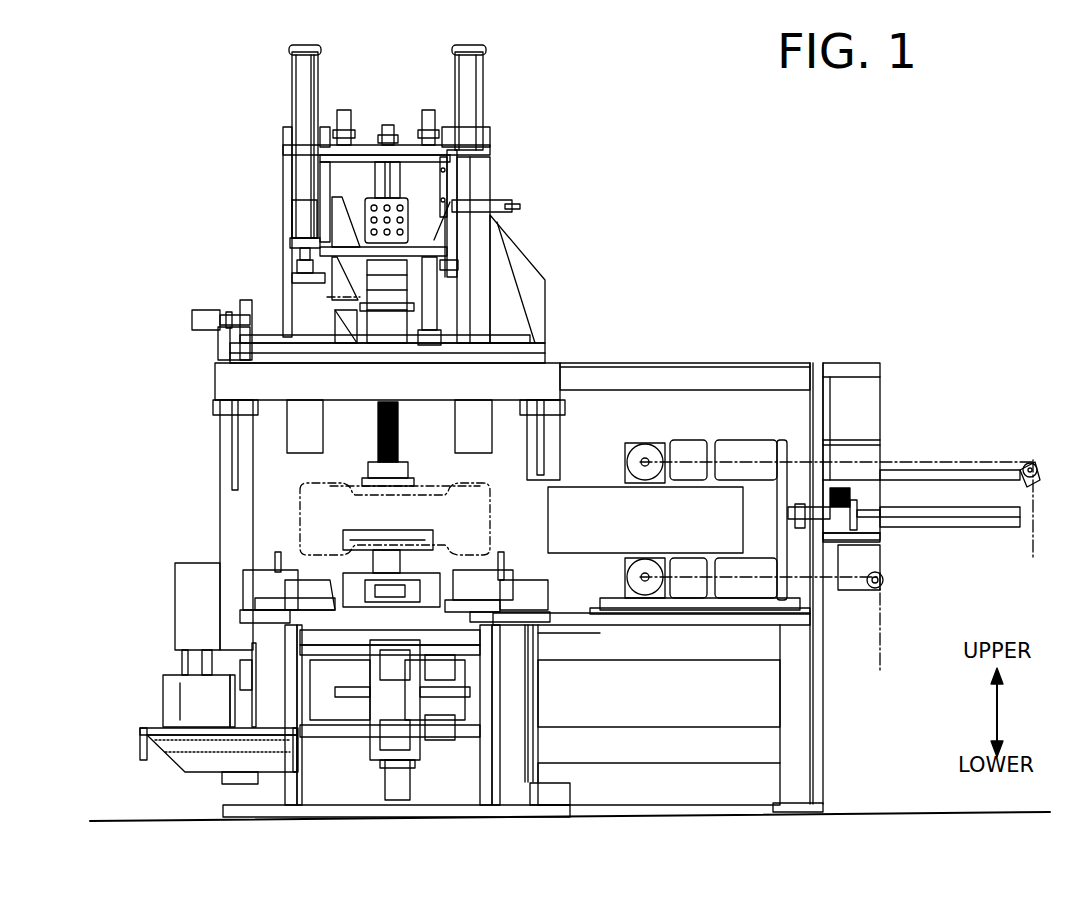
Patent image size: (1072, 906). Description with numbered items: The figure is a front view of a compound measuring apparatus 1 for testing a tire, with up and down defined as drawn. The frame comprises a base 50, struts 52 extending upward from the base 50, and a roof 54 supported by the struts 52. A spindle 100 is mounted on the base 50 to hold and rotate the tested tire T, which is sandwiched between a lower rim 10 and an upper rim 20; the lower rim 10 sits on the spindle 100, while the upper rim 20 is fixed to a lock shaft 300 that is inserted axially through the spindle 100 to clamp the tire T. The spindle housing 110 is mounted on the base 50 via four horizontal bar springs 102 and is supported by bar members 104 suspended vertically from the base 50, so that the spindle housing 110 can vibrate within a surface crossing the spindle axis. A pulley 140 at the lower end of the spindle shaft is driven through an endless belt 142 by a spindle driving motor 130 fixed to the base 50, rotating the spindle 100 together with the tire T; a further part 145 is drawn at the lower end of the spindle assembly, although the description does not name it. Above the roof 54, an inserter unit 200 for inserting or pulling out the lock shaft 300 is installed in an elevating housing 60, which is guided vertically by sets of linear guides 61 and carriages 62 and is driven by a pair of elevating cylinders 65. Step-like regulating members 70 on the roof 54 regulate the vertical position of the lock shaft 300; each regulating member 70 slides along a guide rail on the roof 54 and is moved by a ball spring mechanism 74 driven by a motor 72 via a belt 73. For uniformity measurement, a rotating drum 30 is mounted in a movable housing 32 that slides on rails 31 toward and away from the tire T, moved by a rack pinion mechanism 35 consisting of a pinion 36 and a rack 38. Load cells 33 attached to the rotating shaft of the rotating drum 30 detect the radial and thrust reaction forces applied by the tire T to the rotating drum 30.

The measuring apparatus 1 is at (697, 262).
The lower rim 10 is at (352, 538).
The upper rim 20 is at (380, 480).
The rotating drum 30 is at (600, 505).
The rails 31 is at (723, 620).
The movable housing 32 is at (735, 442).
The load cells 33 is at (650, 445).
The rack pinion mechanism 35 is at (1005, 410).
The pinion 36 is at (870, 520).
The rack 38 is at (950, 505).
The base 50 is at (548, 790).
The struts 52 is at (220, 440).
The roof 54 is at (500, 360).
The elevating housing 60 is at (348, 178).
The linear guides 61 is at (483, 188).
The carriages 62 is at (460, 170).
The elevating cylinders 65 is at (300, 83).
The regulating member 70 is at (380, 365).
The motor 72 is at (205, 312).
The belt 73 is at (228, 345).
The ball spring mechanism 74 is at (325, 365).
The spindle 100 is at (330, 577).
The bar springs 102 is at (300, 672).
The bar members 104 is at (420, 660).
The spindle housing 110 is at (392, 715).
The spindle driving motor 130 is at (180, 688).
The pulley 140 is at (372, 750).
The endless belt 142 is at (185, 745).
The nozzle 145 is at (400, 790).
The inserter unit 200 is at (305, 320).
The lock shaft 300 is at (398, 450).
The tested tire T is at (300, 500).